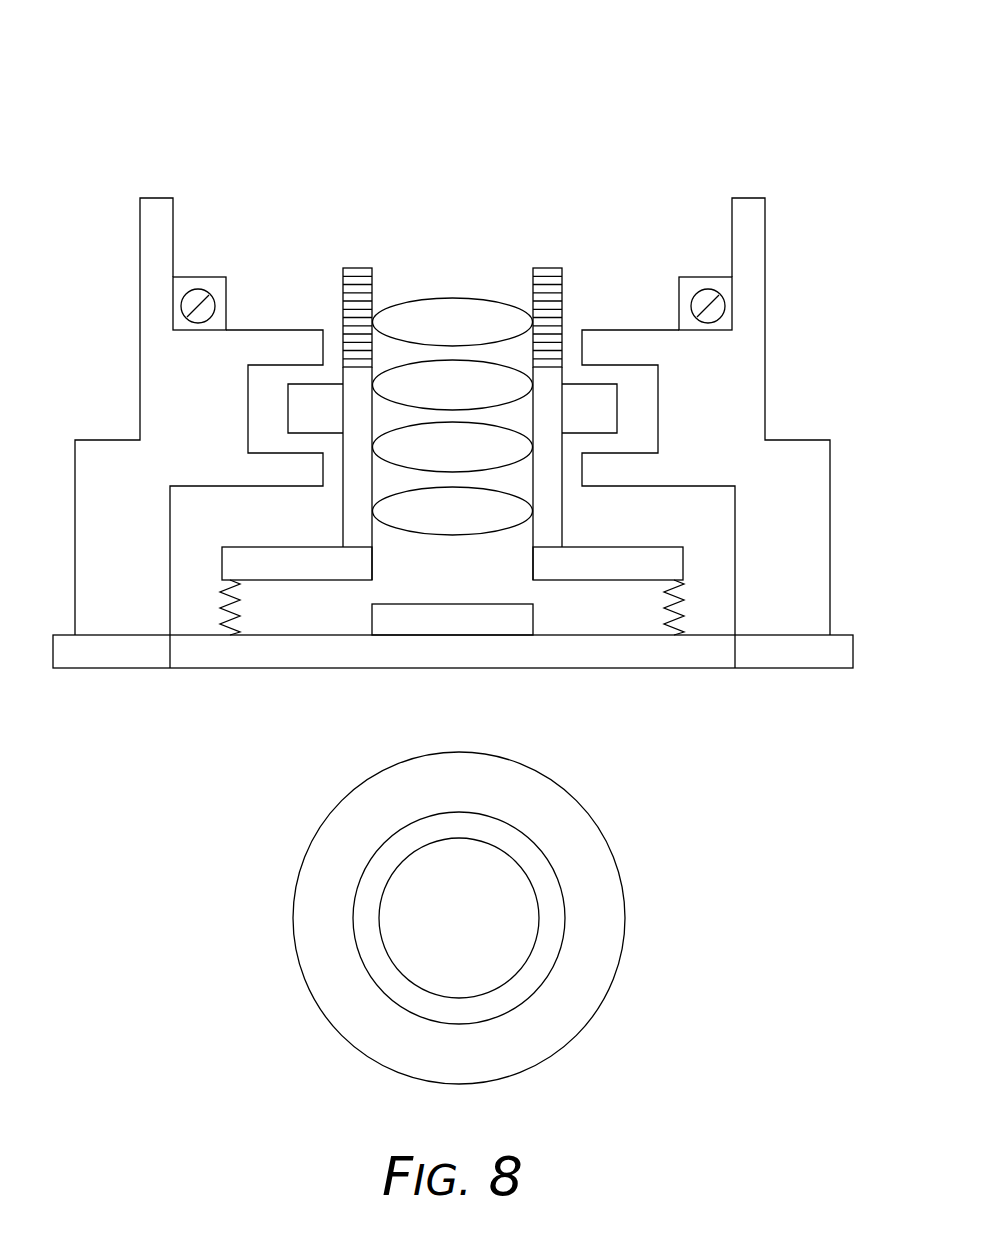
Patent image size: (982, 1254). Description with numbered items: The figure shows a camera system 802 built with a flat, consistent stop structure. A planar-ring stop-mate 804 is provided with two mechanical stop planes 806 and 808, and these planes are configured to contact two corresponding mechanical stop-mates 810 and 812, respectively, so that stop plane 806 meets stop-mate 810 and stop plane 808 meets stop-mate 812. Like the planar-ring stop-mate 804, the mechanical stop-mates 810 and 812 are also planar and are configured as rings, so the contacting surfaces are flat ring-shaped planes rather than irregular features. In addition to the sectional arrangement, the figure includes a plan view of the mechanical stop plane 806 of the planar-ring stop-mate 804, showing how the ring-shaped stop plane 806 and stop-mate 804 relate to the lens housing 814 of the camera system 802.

The camera system 802 is at (754, 60).
The planar-ring stop-mate 804 is at (332, 412).
The mechanical stop plane 806 is at (305, 388).
The mechanical stop plane 808 is at (305, 438).
The mechanical stop-mate 810 is at (608, 350).
The mechanical stop-mate 812 is at (300, 462).
The lens housing 814 is at (382, 870).